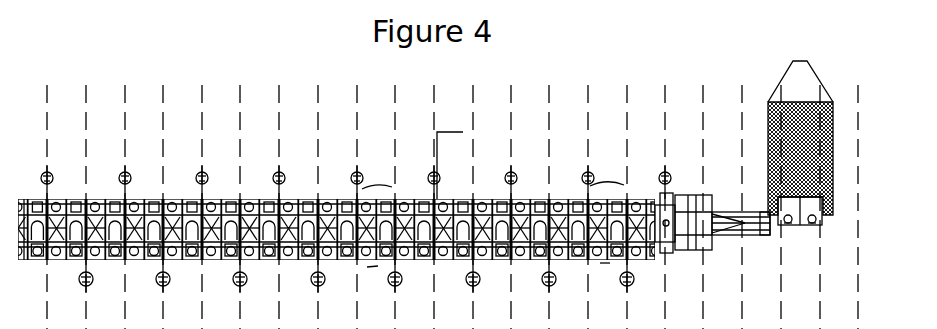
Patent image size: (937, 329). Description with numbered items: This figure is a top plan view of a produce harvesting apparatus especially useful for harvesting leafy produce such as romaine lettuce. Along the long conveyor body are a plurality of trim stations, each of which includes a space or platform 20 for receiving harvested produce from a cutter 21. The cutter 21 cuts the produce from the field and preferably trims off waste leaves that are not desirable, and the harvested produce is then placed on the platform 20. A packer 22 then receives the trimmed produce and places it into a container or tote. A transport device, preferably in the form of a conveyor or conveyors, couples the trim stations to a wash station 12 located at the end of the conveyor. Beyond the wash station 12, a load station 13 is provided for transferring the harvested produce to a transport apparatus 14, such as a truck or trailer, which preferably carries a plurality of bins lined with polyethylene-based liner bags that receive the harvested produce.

The wash station 12 is at (678, 261).
The load station 13 is at (765, 251).
The transport apparatus 14 is at (833, 154).
The platform 20 is at (234, 199).
The cutter 21 is at (283, 168).
The packer 22 is at (531, 199).